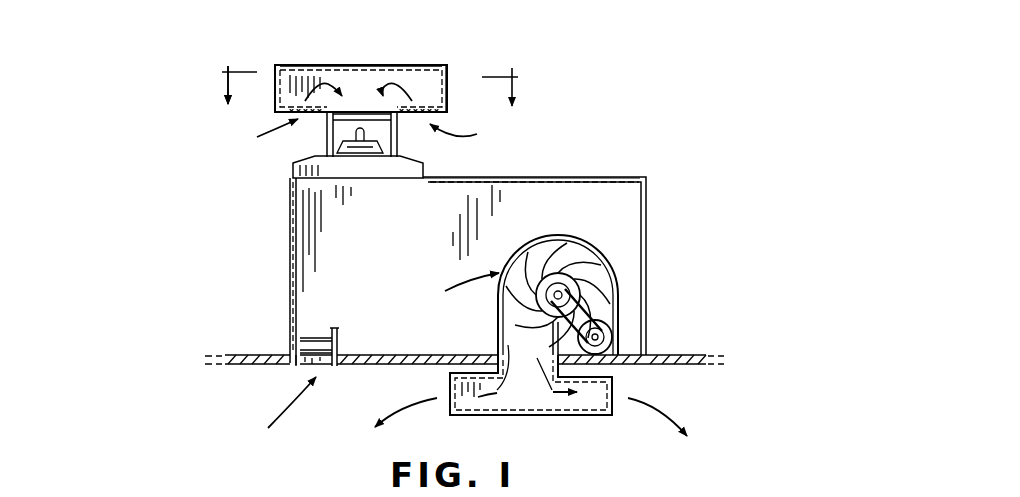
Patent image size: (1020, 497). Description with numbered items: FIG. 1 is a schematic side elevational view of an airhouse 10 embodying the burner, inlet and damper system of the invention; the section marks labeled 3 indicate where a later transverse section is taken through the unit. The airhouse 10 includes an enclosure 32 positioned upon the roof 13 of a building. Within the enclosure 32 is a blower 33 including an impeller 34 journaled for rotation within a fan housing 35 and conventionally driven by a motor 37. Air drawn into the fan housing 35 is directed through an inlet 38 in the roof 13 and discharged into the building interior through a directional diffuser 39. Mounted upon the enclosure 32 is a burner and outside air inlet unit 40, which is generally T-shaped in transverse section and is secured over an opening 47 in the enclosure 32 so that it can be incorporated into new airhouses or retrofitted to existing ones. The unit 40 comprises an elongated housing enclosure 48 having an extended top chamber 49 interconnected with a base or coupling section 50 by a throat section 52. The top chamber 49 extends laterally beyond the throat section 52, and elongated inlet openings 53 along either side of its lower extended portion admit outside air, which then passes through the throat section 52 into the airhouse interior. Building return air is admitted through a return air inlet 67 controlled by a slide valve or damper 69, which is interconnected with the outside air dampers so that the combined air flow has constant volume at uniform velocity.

The section line 3- 3 is at (366, 75).
The airhouse 10 is at (652, 126).
The roof 13 is at (258, 354).
The enclosure 32 is at (648, 262).
The blower 33 is at (452, 289).
The impeller 34 is at (573, 252).
The housing 35 is at (621, 265).
The motor 37 is at (613, 338).
The inlet 38 is at (527, 366).
The directional diffuser 39 is at (590, 417).
The burner and outside air inlet unit 40 is at (388, 54).
The opening 47 is at (385, 184).
The housing enclosure 48 is at (450, 73).
The top chamber 49 is at (302, 65).
The base or coupling section 50 is at (294, 160).
The throat section 52 is at (327, 137).
The inlet openings 53 is at (400, 117).
The return air inlet 67 is at (315, 368).
The slide valve or damper 69 is at (296, 373).